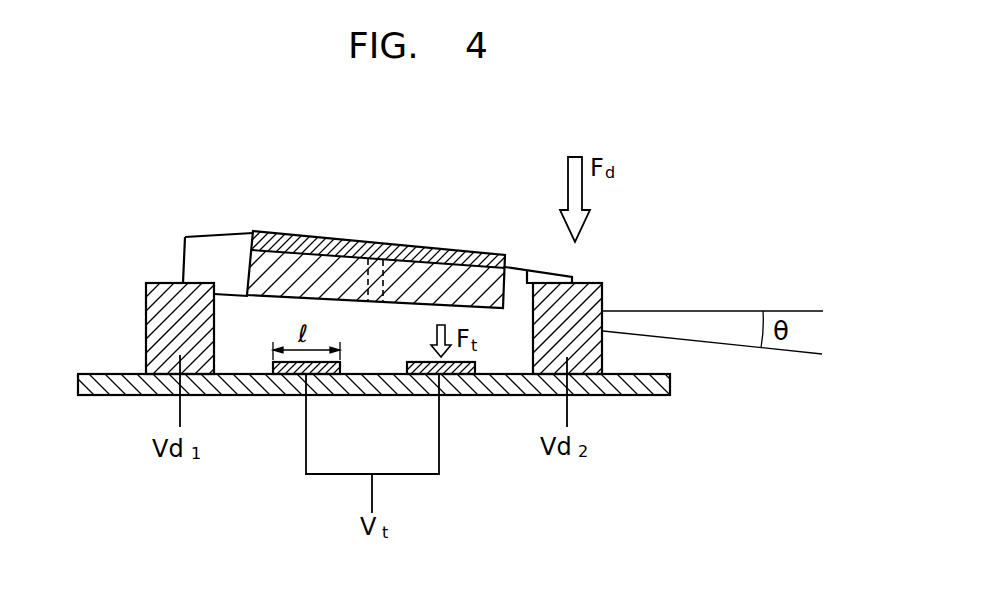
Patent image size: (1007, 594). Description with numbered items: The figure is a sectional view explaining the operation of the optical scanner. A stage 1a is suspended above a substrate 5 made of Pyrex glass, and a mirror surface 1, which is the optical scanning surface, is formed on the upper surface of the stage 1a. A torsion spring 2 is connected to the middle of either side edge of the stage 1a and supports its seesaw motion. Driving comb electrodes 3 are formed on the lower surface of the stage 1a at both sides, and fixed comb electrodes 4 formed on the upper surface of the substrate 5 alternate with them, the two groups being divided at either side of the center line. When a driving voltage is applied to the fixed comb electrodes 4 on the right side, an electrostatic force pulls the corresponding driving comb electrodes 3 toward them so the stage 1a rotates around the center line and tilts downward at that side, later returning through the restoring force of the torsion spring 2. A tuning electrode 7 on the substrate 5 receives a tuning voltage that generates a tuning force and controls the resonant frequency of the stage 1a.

The mirror surface 1 is at (340, 240).
The stage 1a is at (292, 270).
The torsion spring 2 is at (407, 247).
The driving comb electrodes 3 is at (185, 237).
The fixed comb electrodes 4 is at (146, 297).
The substrate 5 is at (507, 382).
The tuning electrode 7 is at (337, 395).